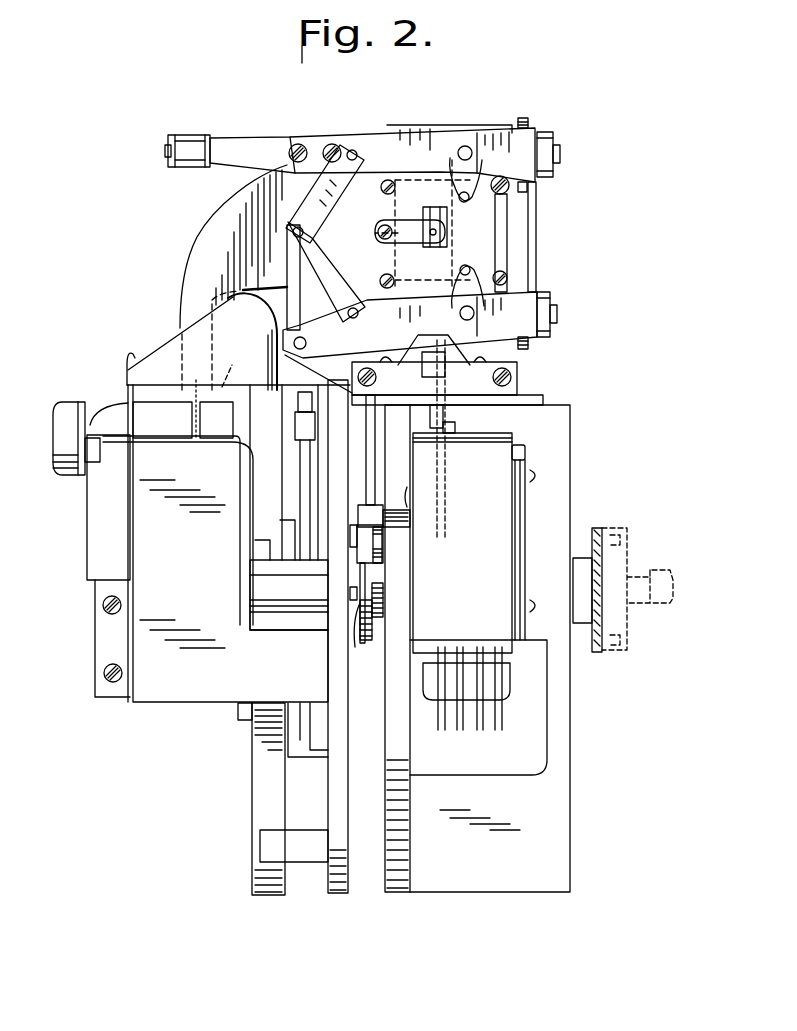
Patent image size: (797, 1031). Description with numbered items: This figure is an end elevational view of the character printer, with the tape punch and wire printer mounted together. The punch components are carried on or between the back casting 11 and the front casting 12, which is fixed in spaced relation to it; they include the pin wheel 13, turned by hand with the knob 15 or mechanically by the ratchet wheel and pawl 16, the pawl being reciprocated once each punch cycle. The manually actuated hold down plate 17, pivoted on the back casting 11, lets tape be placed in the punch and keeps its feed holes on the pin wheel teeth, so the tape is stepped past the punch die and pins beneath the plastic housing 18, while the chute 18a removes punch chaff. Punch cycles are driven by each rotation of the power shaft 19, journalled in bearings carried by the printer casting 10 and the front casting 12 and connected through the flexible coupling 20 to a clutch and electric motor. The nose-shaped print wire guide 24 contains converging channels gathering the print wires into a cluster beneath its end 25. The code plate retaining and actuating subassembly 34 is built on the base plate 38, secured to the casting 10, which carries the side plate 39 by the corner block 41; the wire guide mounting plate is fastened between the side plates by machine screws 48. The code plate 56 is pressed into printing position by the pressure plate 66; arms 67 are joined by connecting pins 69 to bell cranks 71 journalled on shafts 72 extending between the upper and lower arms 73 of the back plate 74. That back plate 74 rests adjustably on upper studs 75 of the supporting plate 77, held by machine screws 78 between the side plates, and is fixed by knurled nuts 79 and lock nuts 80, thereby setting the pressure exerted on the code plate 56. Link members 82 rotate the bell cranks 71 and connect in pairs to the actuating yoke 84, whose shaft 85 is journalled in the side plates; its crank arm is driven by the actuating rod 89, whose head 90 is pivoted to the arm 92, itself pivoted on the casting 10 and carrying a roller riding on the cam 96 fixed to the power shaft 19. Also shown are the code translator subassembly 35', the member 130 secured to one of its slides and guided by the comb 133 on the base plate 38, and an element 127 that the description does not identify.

The casting 10 is at (565, 434).
The back casting 11 is at (340, 893).
The front casting 12 is at (100, 556).
The pin wheel 13 is at (200, 418).
The knob 15 is at (60, 470).
The ratchet wheel and pawl 16 is at (298, 418).
The hold down plate 17 is at (172, 430).
The plastic housing 18 is at (197, 323).
The chute 18a is at (263, 478).
The power shaft 19 is at (365, 639).
The flexible coupling 20 is at (605, 653).
The print wire guide 24 is at (218, 222).
The end of wire guide 25 is at (232, 365).
The code plate retaining and actuating subassembly 34 is at (432, 122).
The code translator subassembly 35' is at (513, 529).
The base plate 38 is at (543, 400).
The side plate 39 is at (482, 125).
The corner block 41 is at (517, 380).
The machine screws 48 is at (381, 188).
The code plate 56 is at (440, 248).
The pressure plate 66 is at (447, 216).
The arms 67 is at (407, 233).
The connecting pins 69 is at (472, 175).
The bell cranks 71 is at (384, 135).
The shafts 72 is at (458, 153).
The arms of back plate 73 is at (527, 128).
The back plate 74 is at (538, 237).
The upper studs 75 is at (560, 153).
The supporting plate 77 is at (507, 213).
The machine screws 78 is at (509, 190).
The knurled nuts 79 is at (523, 118).
The lock nuts 80 is at (548, 130).
The link members 82 is at (322, 215).
The actuating yoke 84 is at (287, 262).
The shaft 85 is at (308, 345).
The actuating rod 89 is at (375, 426).
The head 90 is at (378, 510).
The arm 92 is at (373, 542).
The cam 96 is at (385, 640).
The bracket 127 is at (400, 250).
The member 130 is at (445, 343).
The comb 133 is at (512, 371).